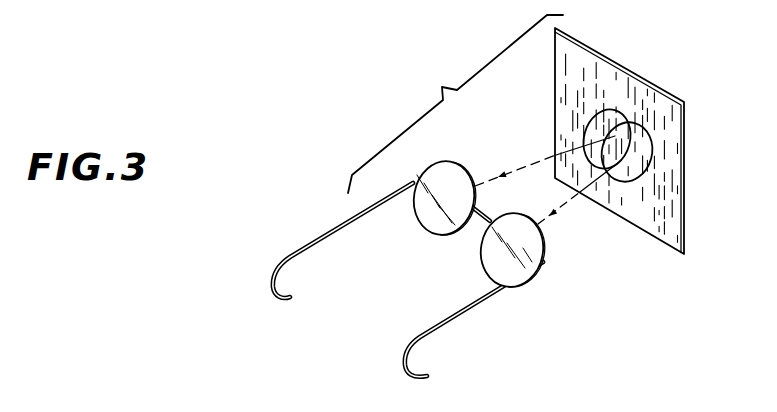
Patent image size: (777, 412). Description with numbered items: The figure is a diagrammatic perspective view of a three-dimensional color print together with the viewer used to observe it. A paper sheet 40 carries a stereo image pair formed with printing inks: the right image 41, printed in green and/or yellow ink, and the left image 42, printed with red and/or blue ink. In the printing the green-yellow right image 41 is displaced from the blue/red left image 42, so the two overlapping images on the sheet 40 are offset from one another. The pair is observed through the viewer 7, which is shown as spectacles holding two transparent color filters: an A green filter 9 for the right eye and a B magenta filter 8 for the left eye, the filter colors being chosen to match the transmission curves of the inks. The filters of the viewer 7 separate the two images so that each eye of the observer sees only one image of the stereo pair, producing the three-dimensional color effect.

The viewer 7 is at (487, 211).
The magenta filter 8 is at (423, 225).
The green filter 9 is at (495, 252).
The paper sheet 40 is at (668, 89).
The right image 41 is at (649, 170).
The left image 42 is at (600, 112).